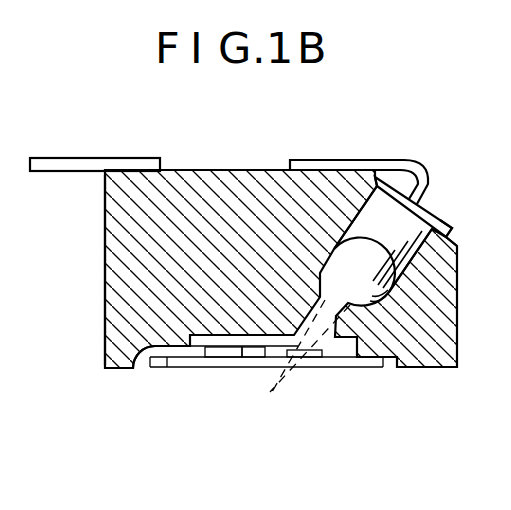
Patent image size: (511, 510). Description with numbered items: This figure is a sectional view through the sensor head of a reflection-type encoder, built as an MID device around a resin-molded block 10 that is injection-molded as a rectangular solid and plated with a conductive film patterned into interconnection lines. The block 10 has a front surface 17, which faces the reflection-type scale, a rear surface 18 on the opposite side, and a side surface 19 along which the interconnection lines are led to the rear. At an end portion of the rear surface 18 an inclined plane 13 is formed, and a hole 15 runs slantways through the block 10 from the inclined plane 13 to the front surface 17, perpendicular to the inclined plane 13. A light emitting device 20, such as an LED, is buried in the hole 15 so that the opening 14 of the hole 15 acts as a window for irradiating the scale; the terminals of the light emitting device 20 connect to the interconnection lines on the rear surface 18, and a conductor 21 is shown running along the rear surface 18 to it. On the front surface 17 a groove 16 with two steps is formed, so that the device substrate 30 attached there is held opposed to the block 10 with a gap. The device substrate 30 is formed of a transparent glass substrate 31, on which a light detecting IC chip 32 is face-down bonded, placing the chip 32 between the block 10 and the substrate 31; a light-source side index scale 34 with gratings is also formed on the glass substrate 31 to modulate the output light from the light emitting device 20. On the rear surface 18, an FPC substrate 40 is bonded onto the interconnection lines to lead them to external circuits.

The resin-molded block 10 is at (120, 313).
The inclined plane 13 is at (452, 233).
The opening 14 is at (346, 305).
The hole 15 is at (393, 308).
The groove 16 is at (134, 358).
The front surface 17 is at (438, 367).
The rear surface 18 is at (198, 170).
The side surface 19 is at (105, 243).
The light emitting device 20 is at (418, 203).
The upper electrode 21 is at (390, 160).
The device substrate 30 is at (195, 368).
The glass substrate 31 is at (232, 358).
The light detecting IC chip 32 is at (243, 357).
The light-source side index scale 34 is at (318, 360).
The FPC substrate 40 is at (78, 165).